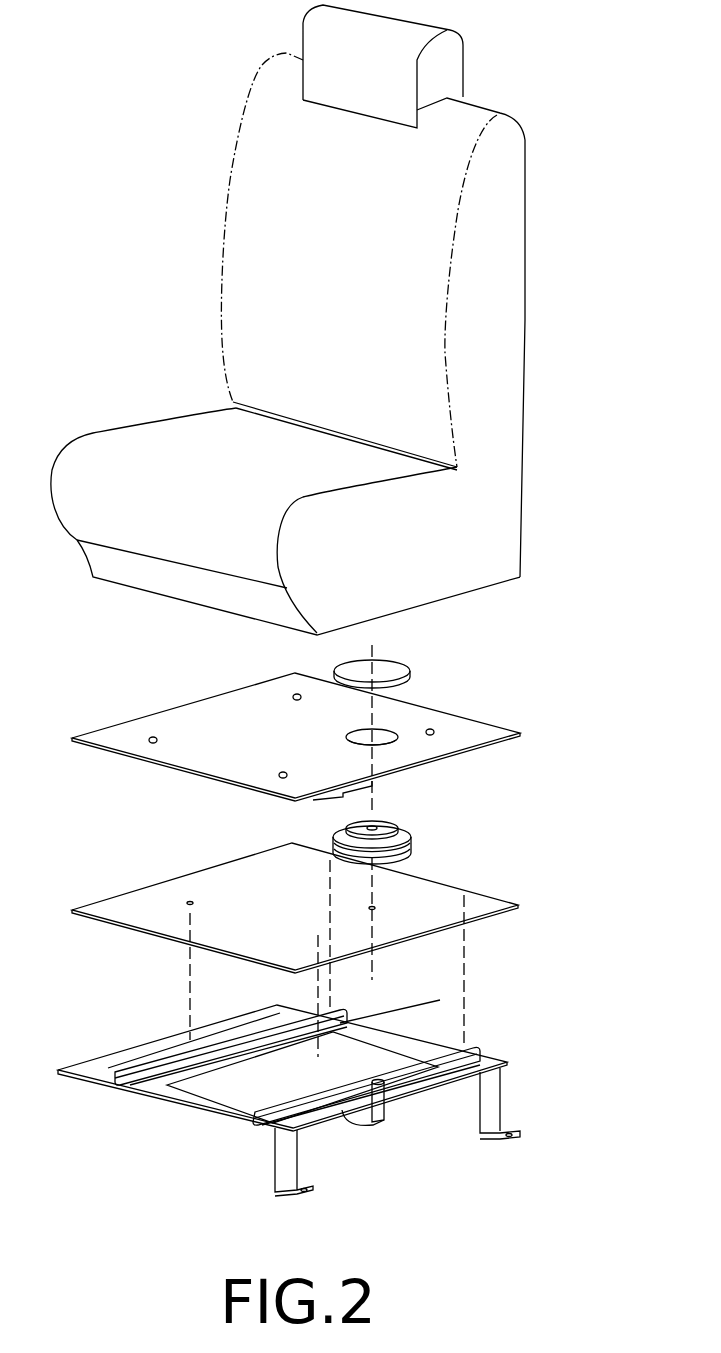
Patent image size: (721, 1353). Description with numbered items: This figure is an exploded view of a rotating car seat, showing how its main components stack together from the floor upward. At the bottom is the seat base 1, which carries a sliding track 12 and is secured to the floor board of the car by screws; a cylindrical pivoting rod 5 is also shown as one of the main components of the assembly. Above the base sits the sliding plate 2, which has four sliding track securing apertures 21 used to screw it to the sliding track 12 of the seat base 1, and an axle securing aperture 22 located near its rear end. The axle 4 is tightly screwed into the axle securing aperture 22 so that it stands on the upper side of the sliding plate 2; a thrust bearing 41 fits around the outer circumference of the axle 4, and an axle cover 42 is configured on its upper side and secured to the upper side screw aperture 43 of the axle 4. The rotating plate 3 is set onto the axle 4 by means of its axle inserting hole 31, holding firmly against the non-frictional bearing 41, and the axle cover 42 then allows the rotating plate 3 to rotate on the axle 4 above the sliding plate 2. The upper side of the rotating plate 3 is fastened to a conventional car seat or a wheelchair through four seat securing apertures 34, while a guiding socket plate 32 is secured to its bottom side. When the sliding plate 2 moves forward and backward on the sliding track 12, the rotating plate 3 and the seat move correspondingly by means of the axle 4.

The seat base 1 is at (349, 1084).
The sliding track 12 is at (347, 1013).
The sliding plate 2 is at (297, 915).
The sliding track securing apertures 21 is at (190, 902).
The axle securing aperture 22 is at (370, 908).
The rotating plate 3 is at (355, 710).
The axle inserting hole 31 is at (380, 742).
The guiding socket plate 32 is at (393, 777).
The seat securing apertures 34 is at (432, 732).
The axle 4 is at (403, 827).
The thrust bearing 41 is at (413, 833).
The axle cover 42 is at (397, 670).
The upper side screw aperture 43 is at (397, 827).
The cylindrical pivoting rod 5 is at (383, 1105).